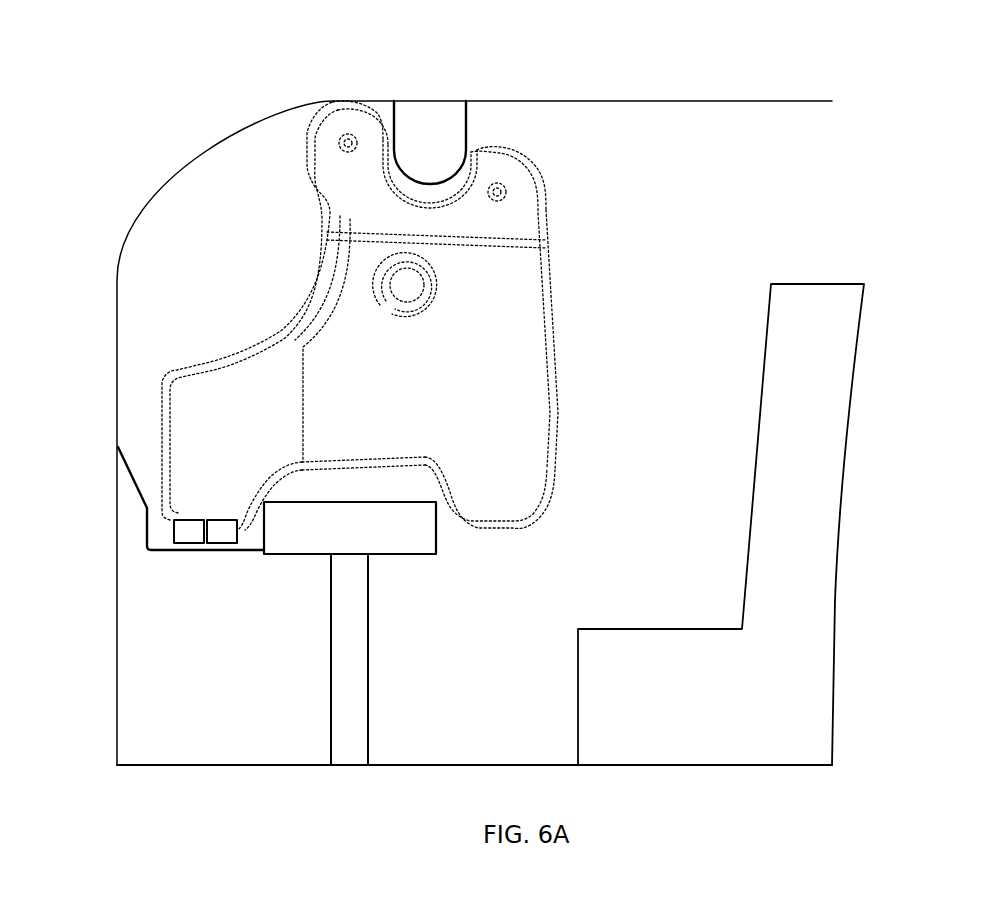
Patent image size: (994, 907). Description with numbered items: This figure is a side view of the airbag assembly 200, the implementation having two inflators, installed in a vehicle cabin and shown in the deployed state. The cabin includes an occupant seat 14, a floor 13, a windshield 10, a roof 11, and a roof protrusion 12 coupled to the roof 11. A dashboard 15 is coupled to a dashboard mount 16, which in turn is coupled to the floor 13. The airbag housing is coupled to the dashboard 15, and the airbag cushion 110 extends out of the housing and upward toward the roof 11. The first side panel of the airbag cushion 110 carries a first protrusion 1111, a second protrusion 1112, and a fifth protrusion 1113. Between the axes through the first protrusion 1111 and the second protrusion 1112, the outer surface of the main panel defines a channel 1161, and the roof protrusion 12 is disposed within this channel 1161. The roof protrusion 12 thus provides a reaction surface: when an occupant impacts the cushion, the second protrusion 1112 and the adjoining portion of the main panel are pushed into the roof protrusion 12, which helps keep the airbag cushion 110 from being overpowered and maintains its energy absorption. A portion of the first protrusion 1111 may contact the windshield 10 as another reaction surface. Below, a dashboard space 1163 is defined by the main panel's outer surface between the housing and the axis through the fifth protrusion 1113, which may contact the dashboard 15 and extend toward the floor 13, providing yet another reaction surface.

The windshield 10 is at (171, 181).
The roof 11 is at (645, 100).
The roof protrusion 12 is at (417, 127).
The floor 13 is at (275, 767).
The occupant seat 14 is at (795, 593).
The dashboard 15 is at (305, 545).
The dashboard mount 16 is at (352, 678).
The airbag cushion 110 is at (408, 329).
The first protrusion 1111 is at (350, 127).
The second protrusion 1112 is at (508, 170).
The fifth protrusion 1113 is at (498, 502).
The channel 1161 is at (476, 133).
The dashboard space 1163 is at (392, 483).
The airbag assembly 200 is at (134, 514).